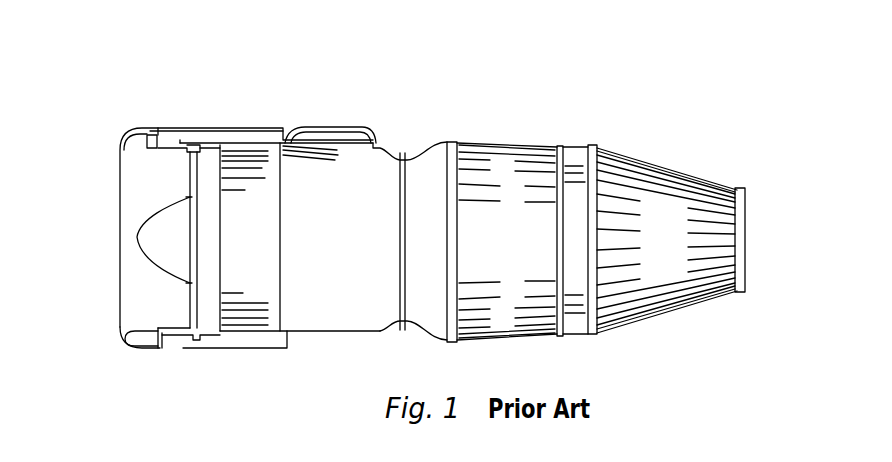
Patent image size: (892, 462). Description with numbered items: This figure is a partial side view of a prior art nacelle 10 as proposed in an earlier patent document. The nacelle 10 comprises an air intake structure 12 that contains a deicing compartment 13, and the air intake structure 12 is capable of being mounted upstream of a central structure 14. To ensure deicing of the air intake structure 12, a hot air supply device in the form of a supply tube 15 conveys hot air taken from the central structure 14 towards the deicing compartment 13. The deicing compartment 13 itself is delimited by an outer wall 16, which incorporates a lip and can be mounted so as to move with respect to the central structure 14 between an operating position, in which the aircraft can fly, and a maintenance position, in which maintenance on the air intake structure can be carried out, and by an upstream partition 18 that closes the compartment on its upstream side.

The nacelle 10 is at (635, 146).
The air intake structure 12 is at (113, 144).
The deicing compartment 13 is at (140, 341).
The central structure 14 is at (327, 331).
The supply tube 15 is at (148, 141).
The outer wall 16 is at (135, 292).
The upstream partition 18 is at (160, 344).